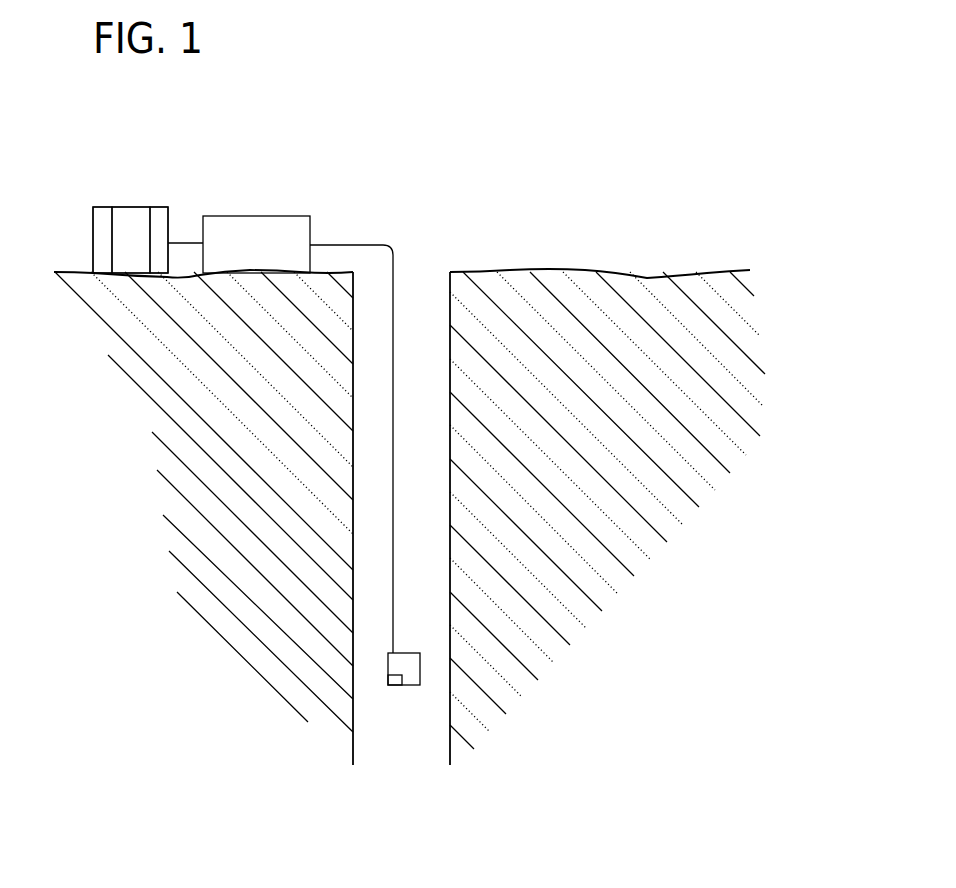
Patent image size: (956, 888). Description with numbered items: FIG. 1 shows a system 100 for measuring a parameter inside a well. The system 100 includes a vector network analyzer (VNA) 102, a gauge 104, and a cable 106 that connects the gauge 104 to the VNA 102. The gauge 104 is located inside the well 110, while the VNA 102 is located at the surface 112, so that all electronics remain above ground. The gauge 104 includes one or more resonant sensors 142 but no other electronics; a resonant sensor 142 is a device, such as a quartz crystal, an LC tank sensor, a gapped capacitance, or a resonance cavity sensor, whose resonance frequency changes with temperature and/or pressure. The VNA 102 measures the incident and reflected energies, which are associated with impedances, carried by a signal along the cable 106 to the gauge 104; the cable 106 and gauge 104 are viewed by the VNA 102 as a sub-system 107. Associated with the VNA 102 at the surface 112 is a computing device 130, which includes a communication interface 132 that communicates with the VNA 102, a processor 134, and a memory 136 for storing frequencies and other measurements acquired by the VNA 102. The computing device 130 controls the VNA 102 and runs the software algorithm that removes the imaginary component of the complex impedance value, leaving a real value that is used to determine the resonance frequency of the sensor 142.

The system 100 is at (463, 119).
The vector network analyzer 102 is at (250, 215).
The gauge 104 is at (408, 662).
The cable 106 is at (395, 435).
The sub-system 107 is at (833, 307).
The well 110 is at (448, 548).
The surface 112 is at (580, 272).
The computing device 130 is at (130, 207).
The communication interface 132 is at (157, 213).
The processor 134 is at (123, 217).
The memory 136 is at (102, 240).
The resonant sensor 142 is at (395, 685).